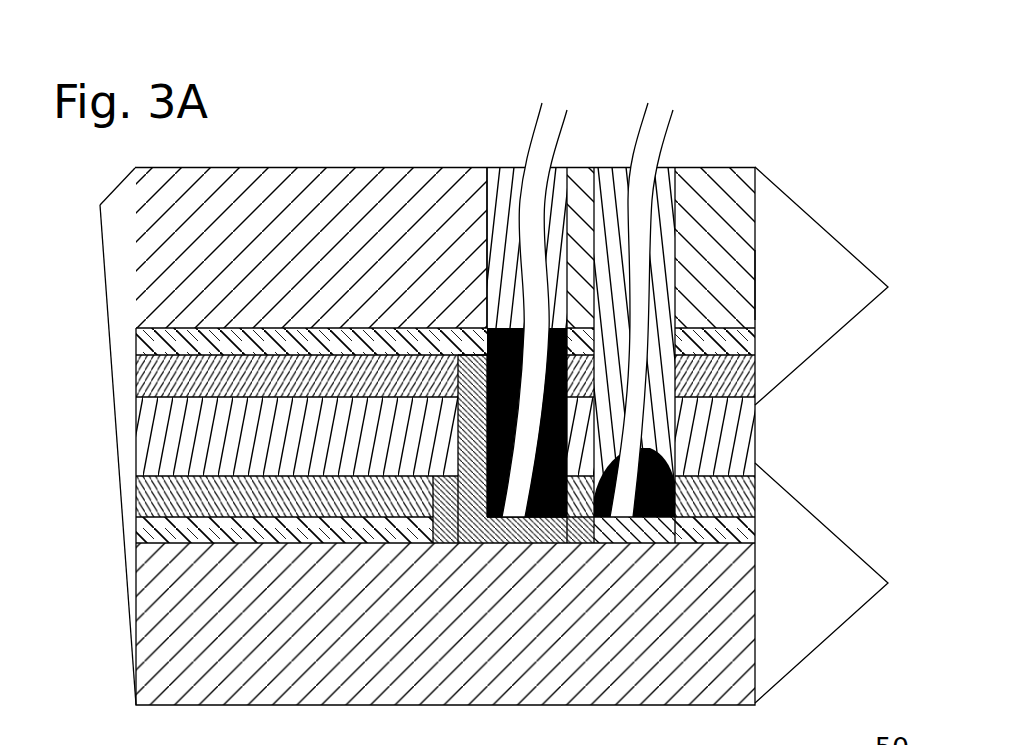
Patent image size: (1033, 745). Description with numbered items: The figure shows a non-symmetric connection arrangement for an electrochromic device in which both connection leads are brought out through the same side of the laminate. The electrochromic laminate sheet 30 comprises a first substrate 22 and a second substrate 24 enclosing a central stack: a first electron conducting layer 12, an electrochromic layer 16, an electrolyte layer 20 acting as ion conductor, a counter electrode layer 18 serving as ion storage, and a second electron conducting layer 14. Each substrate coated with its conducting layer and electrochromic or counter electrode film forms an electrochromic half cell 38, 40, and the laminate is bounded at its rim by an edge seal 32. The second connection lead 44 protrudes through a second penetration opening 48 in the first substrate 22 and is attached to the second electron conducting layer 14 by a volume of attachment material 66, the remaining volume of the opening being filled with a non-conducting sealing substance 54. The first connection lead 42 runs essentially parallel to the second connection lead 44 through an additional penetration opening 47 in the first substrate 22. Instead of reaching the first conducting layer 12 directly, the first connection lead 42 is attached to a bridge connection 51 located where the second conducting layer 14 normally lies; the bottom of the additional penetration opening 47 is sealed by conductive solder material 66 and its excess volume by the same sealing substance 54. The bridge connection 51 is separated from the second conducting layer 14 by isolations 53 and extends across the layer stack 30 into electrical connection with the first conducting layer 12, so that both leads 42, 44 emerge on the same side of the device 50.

The first electron conducting layer 12 is at (162, 340).
The second electron conducting layer 14 is at (163, 543).
The electrochromic layer 16 is at (160, 378).
The counter electrode layer 18 is at (163, 498).
The electrolyte layer 20 is at (757, 430).
The first substrate 22 is at (354, 170).
The second substrate 24 is at (150, 657).
The electrochromic laminate sheet 30 is at (97, 447).
The edge seal 32 is at (757, 283).
The electrochromic half cell 38 is at (843, 286).
The electrochromic half cell 40 is at (843, 583).
The first connection lead 42 is at (550, 135).
The second connection lead 44 is at (672, 377).
The additional penetration opening 47 is at (500, 177).
The second penetration opening 48 is at (665, 167).
The interconnect structure 50 is at (832, 135).
The bridge connection 51 is at (553, 543).
The isolations 53 is at (452, 543).
The sealing substance 54 is at (553, 173).
The attachment material 66 is at (675, 492).